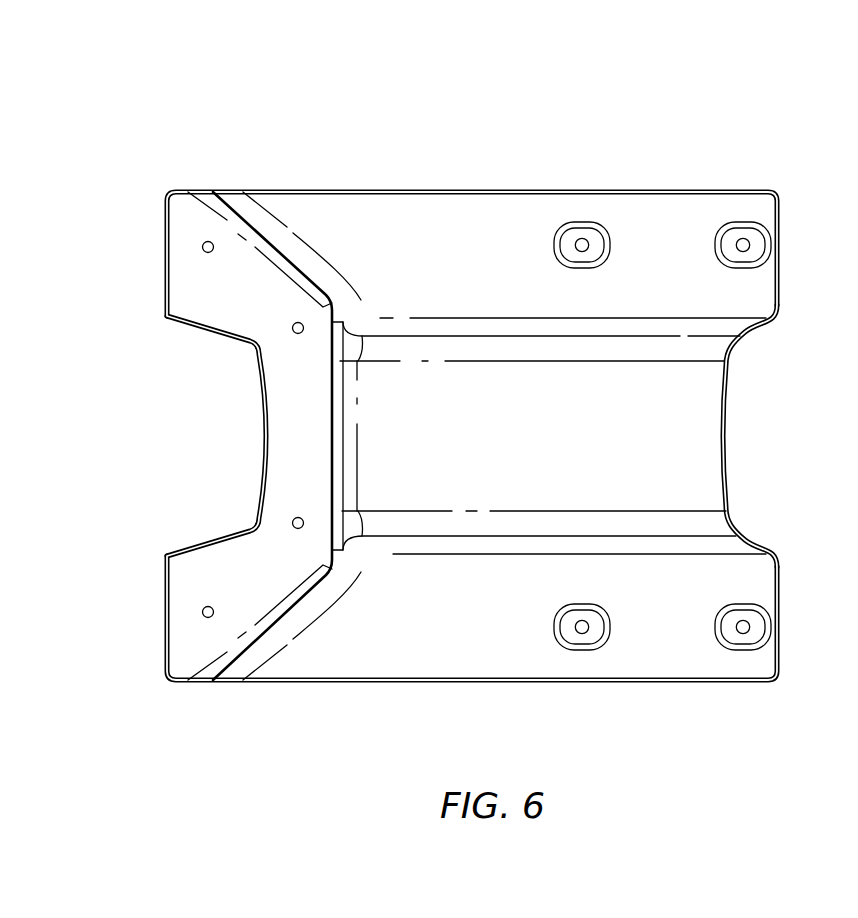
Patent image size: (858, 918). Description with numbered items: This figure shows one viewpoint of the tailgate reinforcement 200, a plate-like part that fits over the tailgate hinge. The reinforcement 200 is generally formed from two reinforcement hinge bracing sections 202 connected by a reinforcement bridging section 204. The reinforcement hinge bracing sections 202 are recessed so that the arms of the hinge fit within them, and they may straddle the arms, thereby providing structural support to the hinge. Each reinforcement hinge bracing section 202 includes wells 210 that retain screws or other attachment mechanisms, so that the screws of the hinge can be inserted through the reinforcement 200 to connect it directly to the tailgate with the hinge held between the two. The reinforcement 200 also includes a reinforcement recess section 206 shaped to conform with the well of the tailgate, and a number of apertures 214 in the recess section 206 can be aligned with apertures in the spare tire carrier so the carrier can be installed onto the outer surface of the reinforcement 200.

The tailgate reinforcement 200 is at (491, 190).
The reinforcement hinge bracing section 202 is at (399, 207).
The reinforcement bridging section 204 is at (692, 436).
The reinforcement recess section 206 is at (290, 438).
The well 210 is at (743, 233).
The aperture 214 is at (201, 611).